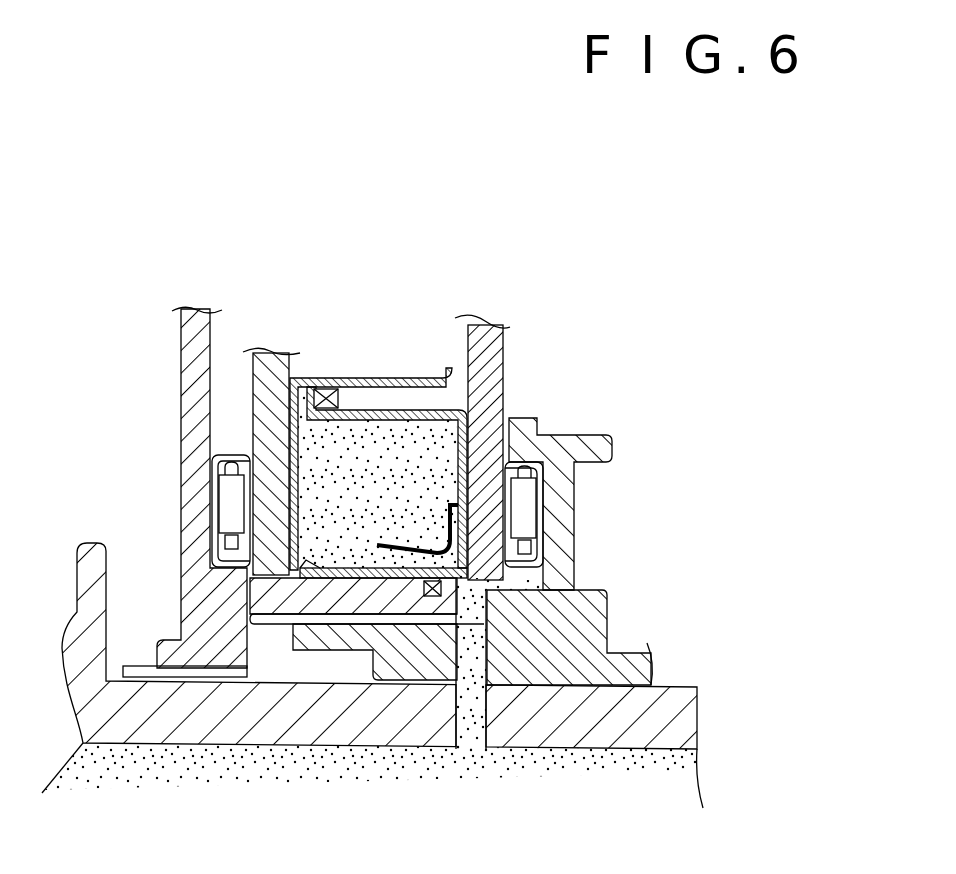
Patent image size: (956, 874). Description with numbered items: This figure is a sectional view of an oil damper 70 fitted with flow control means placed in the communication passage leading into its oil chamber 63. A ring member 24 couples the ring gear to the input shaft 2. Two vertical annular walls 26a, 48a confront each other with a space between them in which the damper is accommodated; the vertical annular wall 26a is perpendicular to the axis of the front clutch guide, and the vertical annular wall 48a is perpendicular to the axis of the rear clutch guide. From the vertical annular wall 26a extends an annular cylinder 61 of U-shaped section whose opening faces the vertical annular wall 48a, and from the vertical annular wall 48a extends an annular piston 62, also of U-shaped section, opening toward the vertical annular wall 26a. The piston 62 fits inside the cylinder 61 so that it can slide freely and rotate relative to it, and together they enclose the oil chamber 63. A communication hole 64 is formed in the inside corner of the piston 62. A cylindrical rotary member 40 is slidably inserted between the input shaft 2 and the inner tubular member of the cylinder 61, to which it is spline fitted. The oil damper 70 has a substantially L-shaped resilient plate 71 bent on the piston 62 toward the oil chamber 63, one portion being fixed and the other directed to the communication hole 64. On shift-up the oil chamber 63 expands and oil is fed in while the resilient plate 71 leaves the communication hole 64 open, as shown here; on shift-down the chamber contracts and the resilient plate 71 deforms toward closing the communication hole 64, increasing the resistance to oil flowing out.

The input shaft 2 is at (660, 731).
The ring member 24 is at (182, 380).
The vertical annular wall 26a is at (278, 357).
The cylindrical rotary member 40 is at (607, 640).
The vertical annular wall 48a is at (497, 330).
The annular cylinder 61 is at (330, 378).
The annular piston 62 is at (428, 407).
The oil chamber 63 is at (392, 543).
The communication hole 64 is at (468, 584).
The oil damper 70 is at (378, 341).
The resilient plate 71 is at (503, 385).